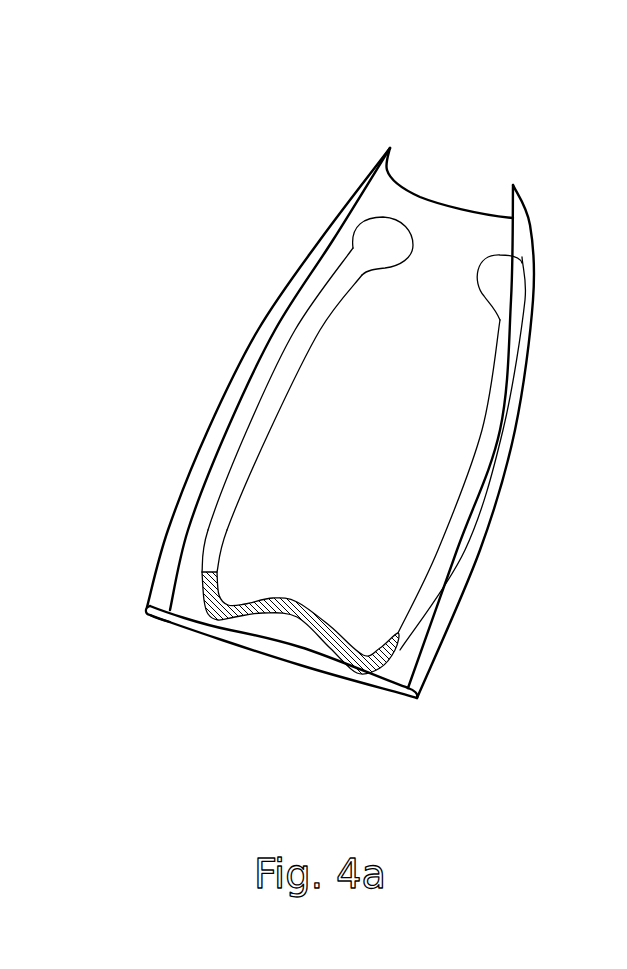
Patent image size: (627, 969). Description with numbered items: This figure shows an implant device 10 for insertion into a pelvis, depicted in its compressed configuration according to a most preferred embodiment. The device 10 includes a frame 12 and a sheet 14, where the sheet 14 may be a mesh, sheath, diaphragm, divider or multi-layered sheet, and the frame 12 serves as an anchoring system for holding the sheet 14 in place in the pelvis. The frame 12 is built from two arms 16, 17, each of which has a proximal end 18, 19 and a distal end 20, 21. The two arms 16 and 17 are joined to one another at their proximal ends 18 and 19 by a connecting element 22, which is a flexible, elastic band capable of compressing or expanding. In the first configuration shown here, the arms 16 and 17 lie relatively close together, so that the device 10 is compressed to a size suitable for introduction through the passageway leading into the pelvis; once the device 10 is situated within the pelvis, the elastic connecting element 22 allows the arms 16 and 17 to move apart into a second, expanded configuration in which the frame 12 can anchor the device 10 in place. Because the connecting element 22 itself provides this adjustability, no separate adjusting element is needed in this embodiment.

The implant device 10 is at (514, 128).
The frame 12 is at (323, 320).
The sheet 14 is at (422, 207).
The arm 16 is at (268, 402).
The arm 17 is at (468, 497).
The proximal end 18 is at (212, 553).
The proximal end 19 is at (410, 620).
The distal end 20 is at (378, 243).
The distal end 21 is at (497, 277).
The connecting element 22 is at (215, 617).